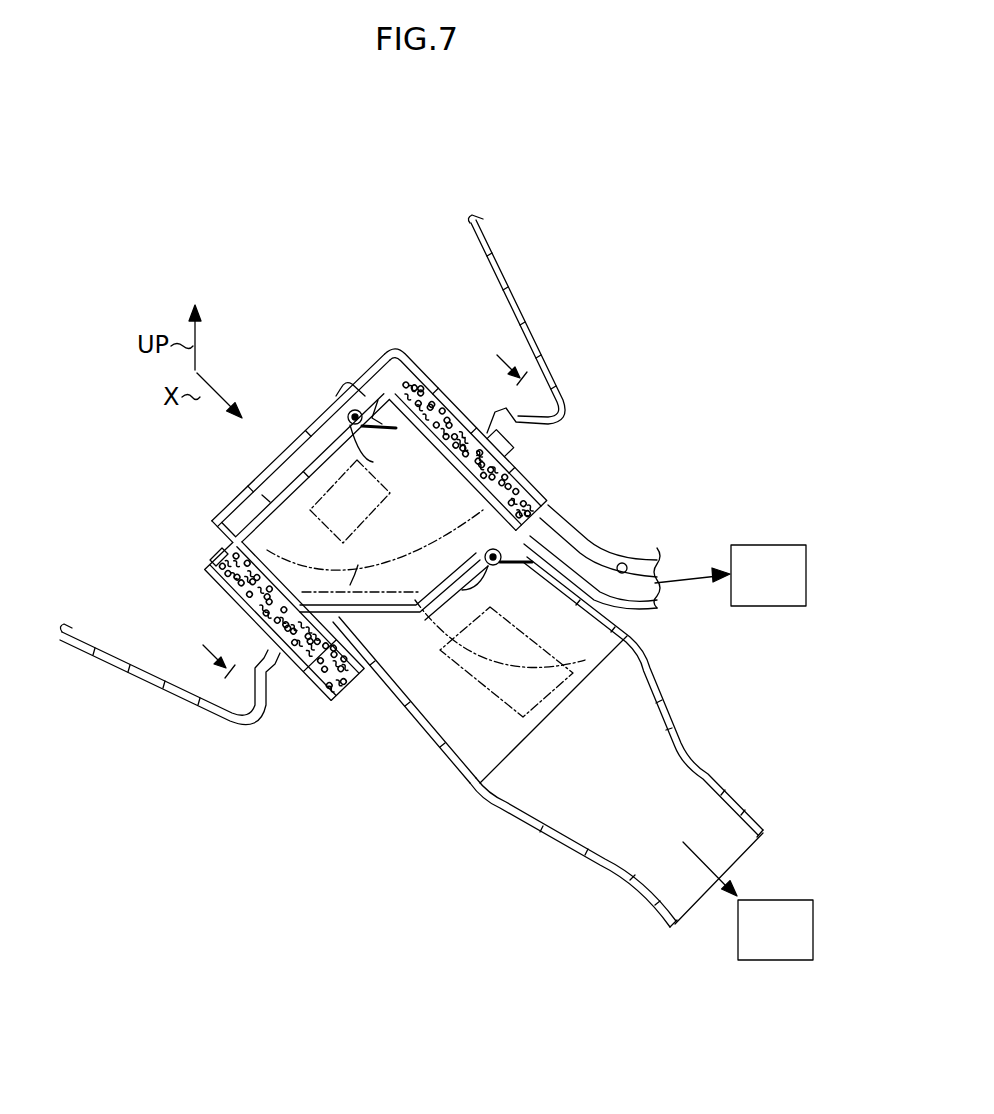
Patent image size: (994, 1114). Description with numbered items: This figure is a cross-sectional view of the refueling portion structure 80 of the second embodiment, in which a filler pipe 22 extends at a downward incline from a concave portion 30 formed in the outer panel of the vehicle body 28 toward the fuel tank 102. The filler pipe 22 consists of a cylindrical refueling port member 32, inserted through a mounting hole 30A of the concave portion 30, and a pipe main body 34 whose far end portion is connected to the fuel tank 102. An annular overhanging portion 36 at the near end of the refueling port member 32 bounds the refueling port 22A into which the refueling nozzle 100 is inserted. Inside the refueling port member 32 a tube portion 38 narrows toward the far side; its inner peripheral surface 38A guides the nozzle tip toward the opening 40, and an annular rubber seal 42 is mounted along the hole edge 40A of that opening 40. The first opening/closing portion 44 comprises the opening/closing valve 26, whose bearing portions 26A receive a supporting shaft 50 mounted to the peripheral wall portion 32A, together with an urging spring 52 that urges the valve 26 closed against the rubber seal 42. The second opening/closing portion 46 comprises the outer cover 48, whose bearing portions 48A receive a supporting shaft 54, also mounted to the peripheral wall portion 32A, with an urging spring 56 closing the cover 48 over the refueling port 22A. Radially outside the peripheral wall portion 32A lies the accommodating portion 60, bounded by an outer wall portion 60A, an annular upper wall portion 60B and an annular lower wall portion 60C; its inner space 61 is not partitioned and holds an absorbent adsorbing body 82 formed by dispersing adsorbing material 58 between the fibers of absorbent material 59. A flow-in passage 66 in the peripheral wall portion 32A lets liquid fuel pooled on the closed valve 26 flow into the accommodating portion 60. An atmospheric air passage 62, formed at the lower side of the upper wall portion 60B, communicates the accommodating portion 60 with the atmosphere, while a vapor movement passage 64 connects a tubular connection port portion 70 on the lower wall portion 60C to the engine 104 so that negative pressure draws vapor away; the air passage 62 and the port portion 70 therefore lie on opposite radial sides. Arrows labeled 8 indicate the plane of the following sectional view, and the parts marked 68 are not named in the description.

The section line of FIG. 8 is at (360, 519).
The filler pipe 22 is at (505, 778).
The refueling port 22A is at (262, 495).
The opening/closing valve 26 is at (455, 628).
The bearing portions 26A is at (565, 585).
The vehicle body 28 is at (311, 499).
The concave portion 30 is at (87, 645).
The mounting hole 30A is at (240, 730).
The refueling port member 32 is at (438, 736).
The peripheral wall portion 32A is at (325, 572).
The pipe main body 34 is at (541, 830).
The overhanging portion 36 is at (344, 387).
The tube portion 38 is at (386, 501).
The inner peripheral surface 38A is at (462, 535).
The opening 40 is at (468, 590).
The hole edge 40A is at (425, 604).
The rubber seal 42 is at (420, 630).
The first opening/closing portion 44 is at (608, 671).
The second opening/closing portion 46 is at (311, 381).
The outer cover 48 is at (312, 472).
The bearing portions 48A is at (356, 410).
The supporting shaft 50 is at (548, 598).
The urging spring 52 is at (577, 603).
The supporting shaft 54 is at (350, 411).
The urging spring 56 is at (379, 426).
The adsorbing material 58 is at (422, 360).
The absorbent material 59 is at (440, 400).
The accommodating portion 60 is at (358, 615).
The outer wall portion 60A is at (232, 606).
The upper wall portion 60B is at (208, 562).
The lower wall portion 60C is at (357, 692).
The inner space 61 is at (303, 686).
The atmospheric air passage 62 is at (225, 548).
The vapor movement passage 64 is at (618, 555).
The flow-in passage 66 is at (256, 641).
The fastener 68 is at (548, 507).
The connection port portion 70 is at (576, 528).
The refueling portion structure 80 is at (218, 290).
The absorbent adsorbing body 82 is at (487, 312).
The refueling nozzle 100 is at (388, 510).
The fuel tank 102 is at (786, 900).
The engine 104 is at (771, 545).